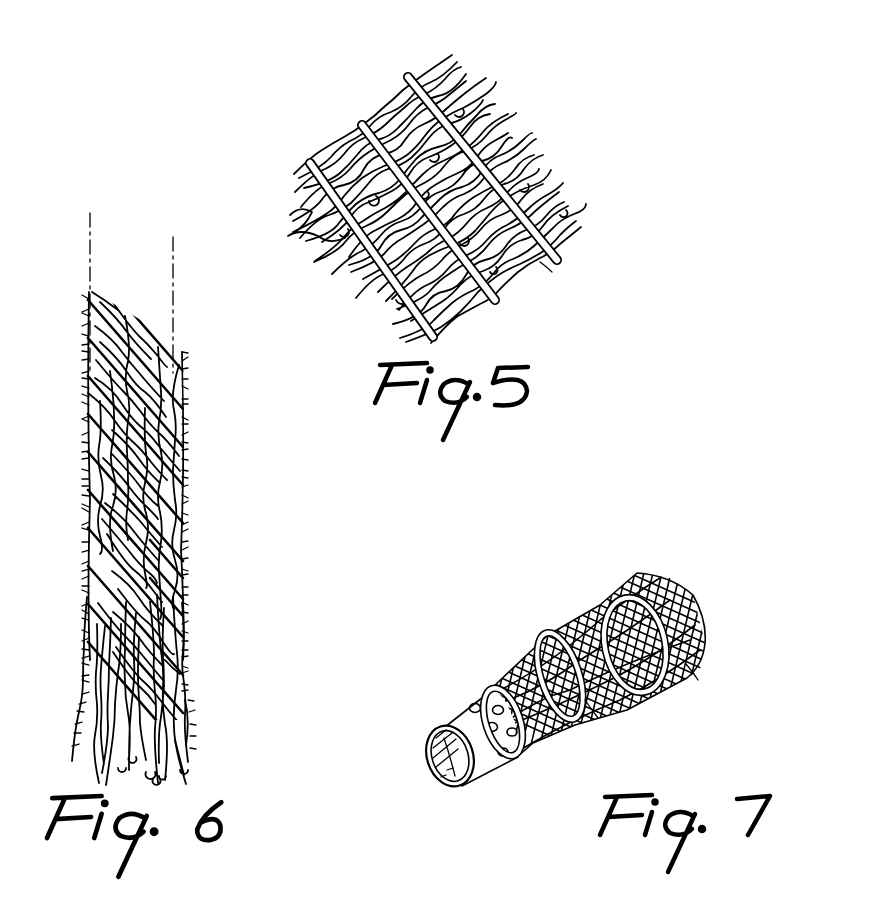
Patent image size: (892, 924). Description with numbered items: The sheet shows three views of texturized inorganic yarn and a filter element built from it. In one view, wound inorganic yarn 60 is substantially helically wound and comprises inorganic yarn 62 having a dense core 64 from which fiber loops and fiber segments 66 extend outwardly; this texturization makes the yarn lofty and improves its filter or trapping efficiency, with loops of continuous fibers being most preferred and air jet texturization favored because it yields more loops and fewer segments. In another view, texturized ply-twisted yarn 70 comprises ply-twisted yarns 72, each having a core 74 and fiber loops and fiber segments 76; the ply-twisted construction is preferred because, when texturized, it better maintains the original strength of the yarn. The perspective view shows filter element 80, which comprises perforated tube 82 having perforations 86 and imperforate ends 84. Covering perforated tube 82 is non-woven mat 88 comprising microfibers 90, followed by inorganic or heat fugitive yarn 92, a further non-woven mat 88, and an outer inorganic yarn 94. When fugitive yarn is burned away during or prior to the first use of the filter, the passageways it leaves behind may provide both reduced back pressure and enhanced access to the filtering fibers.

In FIG. 5, the wound inorganic yarn 60 is at (531, 110).
In FIG. 5, the inorganic yarn 62 is at (373, 120).
In FIG. 5, the core 64 is at (560, 263).
In FIG. 5, the fiber loops and fiber segments 66 is at (357, 251).
In FIG. 6, the texturized ply-twisted yarn 70 is at (240, 516).
In FIG. 6, the ply-twisted yarns 72 is at (186, 583).
In FIG. 6, the core 74 is at (117, 291).
In FIG. 6, the fiber loops and fiber segments 76 is at (184, 754).
In FIG. 7, the filter element 80 is at (569, 659).
In FIG. 7, the perforated tube 82 is at (425, 758).
In FIG. 7, the imperforate ends 84 is at (455, 723).
In FIG. 7, the perforations 86 is at (507, 759).
In FIG. 7, the non-woven mat 88 is at (588, 613).
In FIG. 7, the microfibers 90 is at (507, 681).
In FIG. 7, the inorganic or heat fugitive yarn 92 is at (590, 716).
In FIG. 7, the inorganic yarn 94 is at (690, 662).